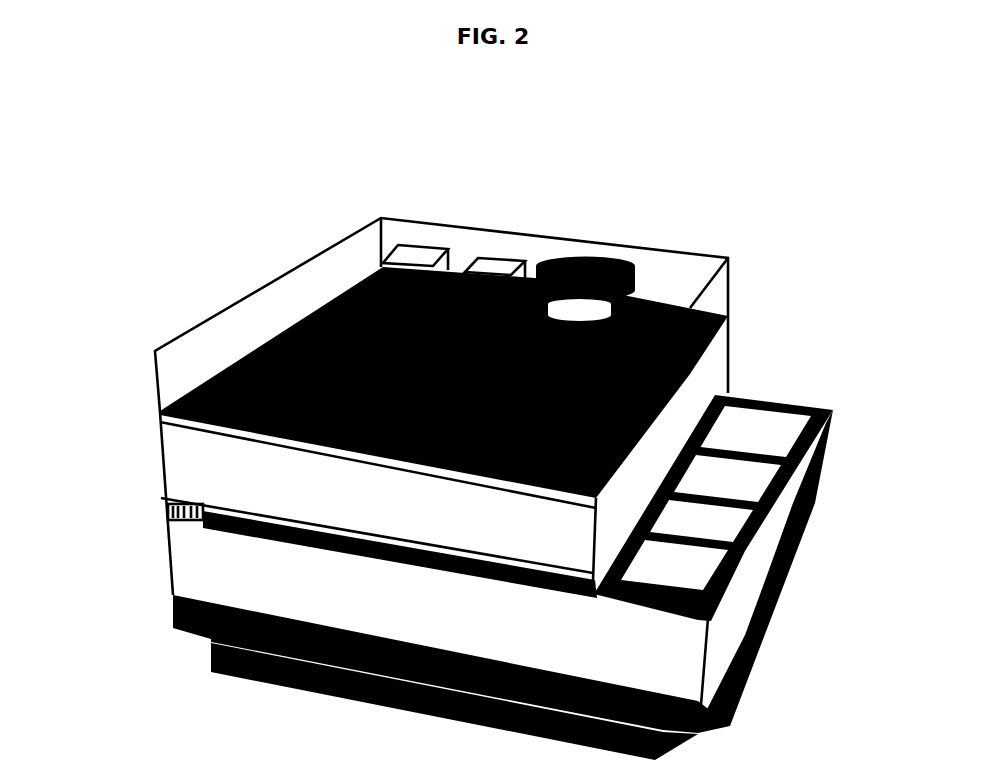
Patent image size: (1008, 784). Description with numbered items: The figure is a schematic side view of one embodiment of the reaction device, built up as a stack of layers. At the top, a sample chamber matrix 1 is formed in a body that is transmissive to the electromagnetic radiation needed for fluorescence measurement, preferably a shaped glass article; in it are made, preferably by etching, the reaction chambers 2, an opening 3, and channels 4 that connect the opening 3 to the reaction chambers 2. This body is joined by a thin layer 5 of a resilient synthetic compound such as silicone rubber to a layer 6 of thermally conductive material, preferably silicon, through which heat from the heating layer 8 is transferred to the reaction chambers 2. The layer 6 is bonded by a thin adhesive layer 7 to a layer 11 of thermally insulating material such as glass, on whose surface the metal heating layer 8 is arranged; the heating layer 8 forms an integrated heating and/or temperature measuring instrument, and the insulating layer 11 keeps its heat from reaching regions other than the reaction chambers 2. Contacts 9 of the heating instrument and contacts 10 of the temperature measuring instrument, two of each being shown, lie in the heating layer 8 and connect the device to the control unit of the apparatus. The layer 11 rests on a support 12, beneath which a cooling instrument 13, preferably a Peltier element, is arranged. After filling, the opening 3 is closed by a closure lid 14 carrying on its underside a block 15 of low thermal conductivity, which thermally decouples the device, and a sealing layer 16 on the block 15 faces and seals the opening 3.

The sample chamber matrix 1 is at (517, 238).
The reaction chambers 2 is at (440, 262).
The opening 3 is at (718, 318).
The channels 4 is at (492, 263).
The thin layer of resilient synthetic compound 5 is at (172, 417).
The layer of thermally conductive material 6 is at (703, 362).
The thin layer 7 is at (167, 488).
The heating layer 8 is at (187, 515).
The contacts of the heating instrument 9 is at (747, 477).
The contacts of the temperature measuring instrument 10 is at (683, 563).
The layer of insulating material 11 is at (187, 562).
The support 12 is at (697, 715).
The cooling instrument 13 is at (203, 653).
The closure lid 14 is at (628, 275).
The block 15 is at (628, 290).
The sealing layer 16 is at (645, 292).